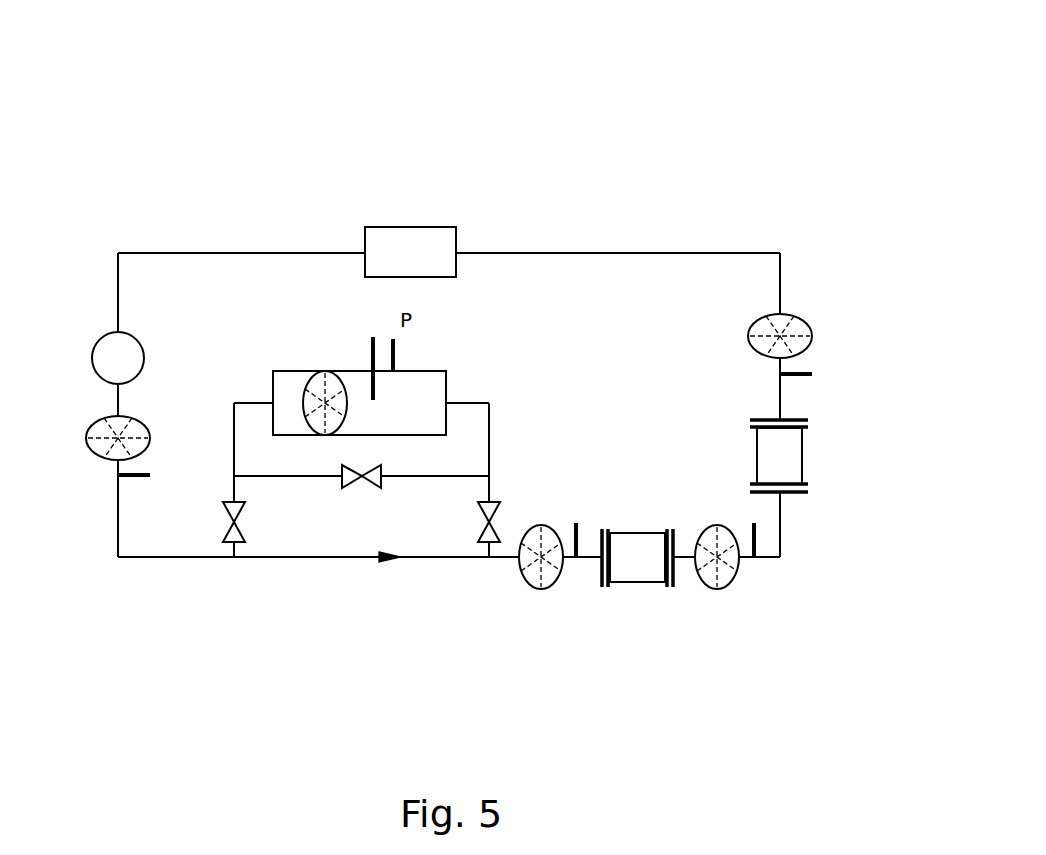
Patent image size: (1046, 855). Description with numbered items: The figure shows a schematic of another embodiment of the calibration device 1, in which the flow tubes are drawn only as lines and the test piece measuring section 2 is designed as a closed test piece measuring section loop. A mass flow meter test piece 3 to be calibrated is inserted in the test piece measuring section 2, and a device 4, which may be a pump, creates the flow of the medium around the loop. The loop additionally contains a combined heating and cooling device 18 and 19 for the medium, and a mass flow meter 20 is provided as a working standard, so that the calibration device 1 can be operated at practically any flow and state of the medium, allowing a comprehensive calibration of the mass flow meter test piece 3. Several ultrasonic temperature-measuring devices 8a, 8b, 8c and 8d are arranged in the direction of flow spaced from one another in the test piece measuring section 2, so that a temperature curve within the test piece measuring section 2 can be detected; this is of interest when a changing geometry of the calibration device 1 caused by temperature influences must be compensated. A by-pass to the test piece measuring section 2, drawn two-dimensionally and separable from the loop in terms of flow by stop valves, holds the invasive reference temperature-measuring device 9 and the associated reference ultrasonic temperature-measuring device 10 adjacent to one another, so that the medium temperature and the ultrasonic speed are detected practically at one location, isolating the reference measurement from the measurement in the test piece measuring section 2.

The calibration device 1 is at (606, 174).
The test piece measuring section 2 is at (785, 560).
The mass flow meter test piece 3 is at (641, 583).
The device for creating a flow 4 is at (108, 336).
The ultrasonic temperature-measuring device 8a is at (806, 318).
The ultrasonic temperature-measuring device 8b is at (106, 454).
The ultrasonic temperature-measuring device 8c is at (533, 591).
The ultrasonic temperature-measuring device 8d is at (728, 591).
The invasive reference temperature-measuring device 9 is at (370, 352).
The reference ultrasonic temperature-measuring device 10 is at (304, 378).
The heating device 18 is at (455, 201).
The cooling device 19 is at (437, 236).
The mass flow meter 20 is at (785, 449).